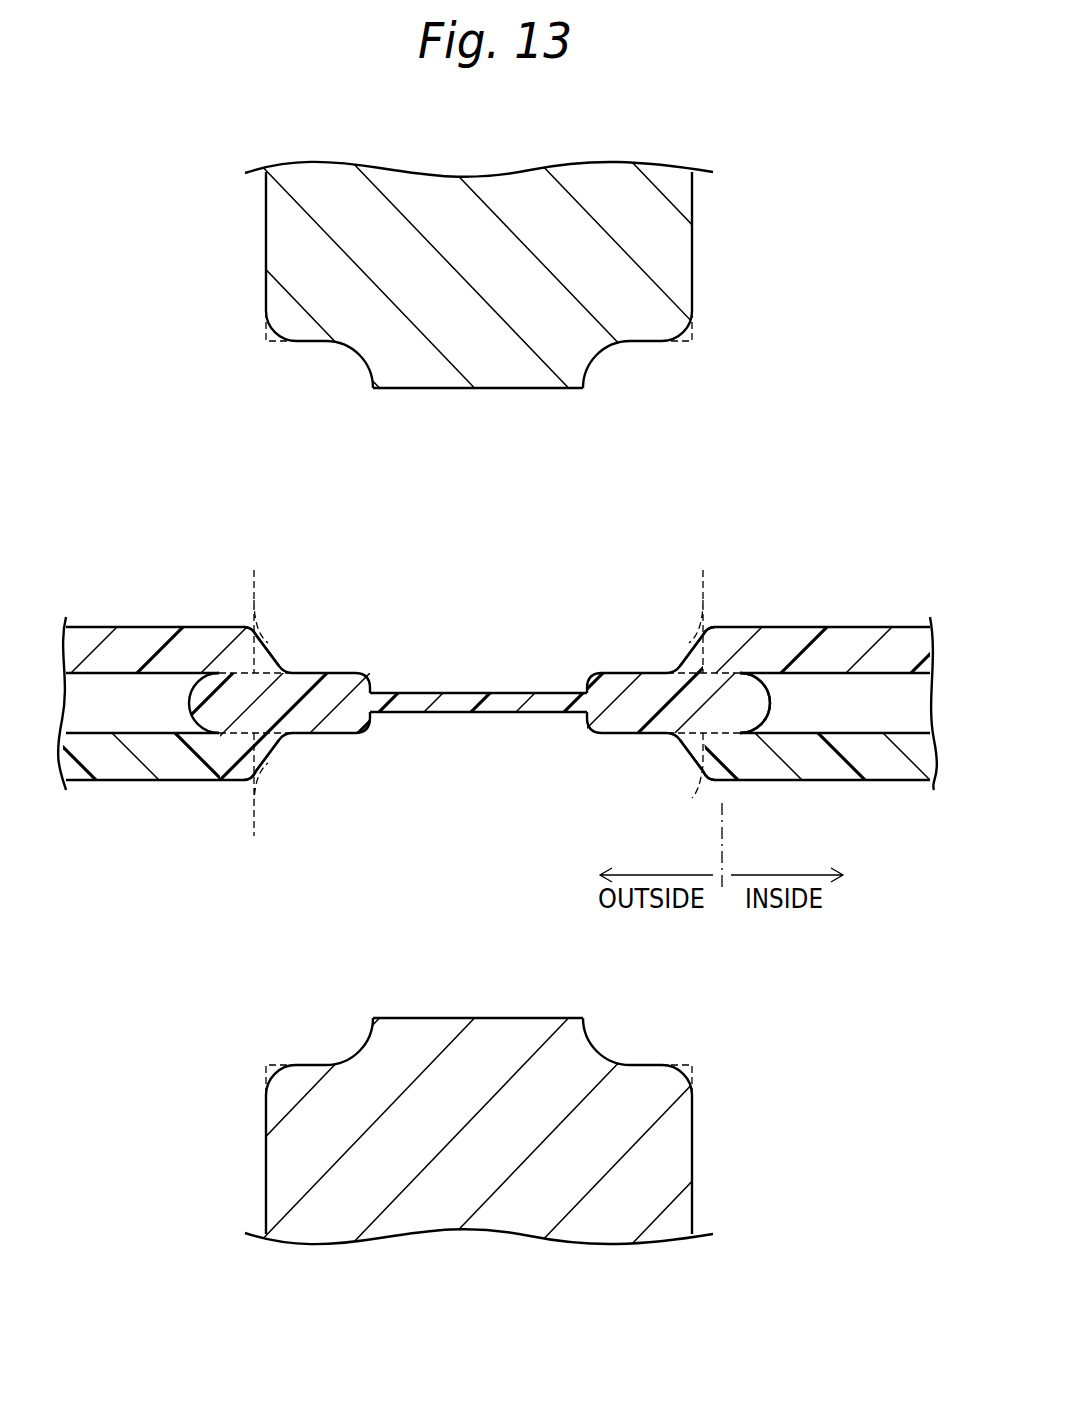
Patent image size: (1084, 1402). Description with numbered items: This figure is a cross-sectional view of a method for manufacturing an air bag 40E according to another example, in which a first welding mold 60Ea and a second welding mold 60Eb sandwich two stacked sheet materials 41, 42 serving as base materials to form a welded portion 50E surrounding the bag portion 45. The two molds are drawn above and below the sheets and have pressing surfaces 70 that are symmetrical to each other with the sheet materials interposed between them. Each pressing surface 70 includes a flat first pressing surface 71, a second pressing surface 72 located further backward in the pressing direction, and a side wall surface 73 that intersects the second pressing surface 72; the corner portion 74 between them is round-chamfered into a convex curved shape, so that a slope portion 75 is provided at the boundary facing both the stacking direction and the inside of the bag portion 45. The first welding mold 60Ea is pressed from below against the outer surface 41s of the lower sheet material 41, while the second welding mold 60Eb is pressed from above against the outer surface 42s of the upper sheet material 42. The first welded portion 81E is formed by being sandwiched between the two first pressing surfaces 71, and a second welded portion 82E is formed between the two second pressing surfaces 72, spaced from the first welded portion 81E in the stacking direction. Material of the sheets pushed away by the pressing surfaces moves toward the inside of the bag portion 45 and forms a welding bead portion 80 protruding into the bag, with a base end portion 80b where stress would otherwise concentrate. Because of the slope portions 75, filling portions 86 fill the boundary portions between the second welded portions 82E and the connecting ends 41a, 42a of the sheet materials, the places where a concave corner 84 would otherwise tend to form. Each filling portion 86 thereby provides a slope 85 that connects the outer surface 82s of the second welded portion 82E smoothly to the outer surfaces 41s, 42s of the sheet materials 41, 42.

The pressing surface 70 is at (510, 703).
The second welding mold 60Eb is at (403, 407).
The first welding mold 60Ea is at (413, 1001).
The first pressing surface 71 is at (550, 390).
The second pressing surface 72 is at (318, 343).
The side wall surface 73 is at (266, 242).
The corner portion 74 is at (266, 341).
The slope portion 75 is at (272, 331).
The air bag 40E is at (146, 496).
The bag portion 45 is at (682, 552).
The sheet material 42 is at (514, 620).
The outer surface 42s is at (873, 627).
The connecting end 42a is at (238, 626).
The sheet material 41 is at (490, 791).
The outer surface 41s is at (872, 780).
The connecting end 41a is at (238, 780).
The welded portion 50E is at (461, 624).
The welding bead portion 80 is at (189, 702).
The base end portion 80b is at (744, 672).
The first welded portion 81E is at (502, 692).
The second welded portion 82E is at (479, 702).
The outer surface 82s is at (316, 672).
The corner 84 is at (488, 702).
The slope 85 is at (479, 700).
The filling portion 86 is at (276, 660).